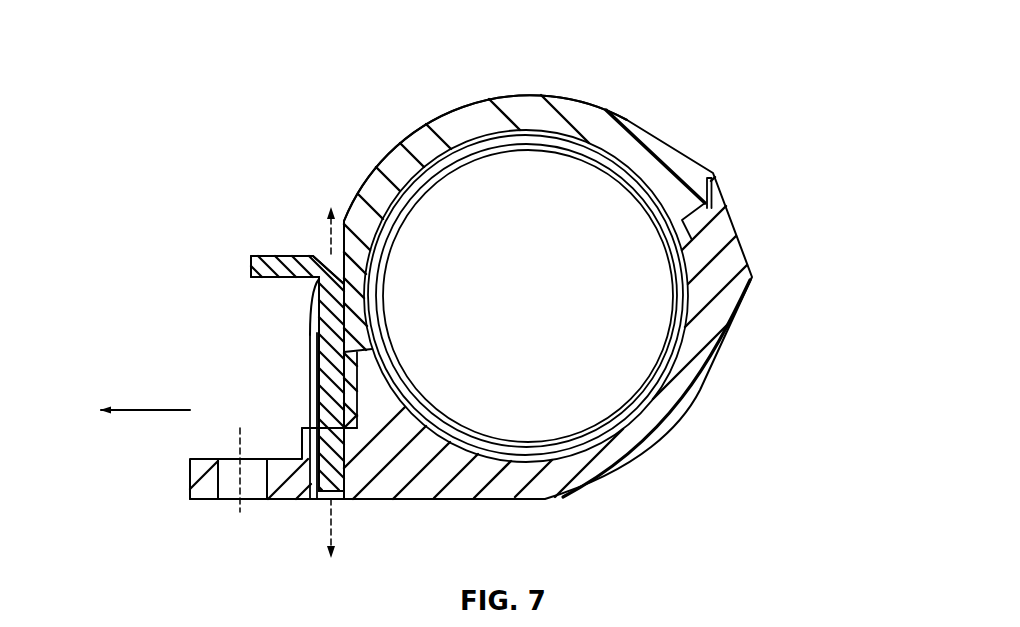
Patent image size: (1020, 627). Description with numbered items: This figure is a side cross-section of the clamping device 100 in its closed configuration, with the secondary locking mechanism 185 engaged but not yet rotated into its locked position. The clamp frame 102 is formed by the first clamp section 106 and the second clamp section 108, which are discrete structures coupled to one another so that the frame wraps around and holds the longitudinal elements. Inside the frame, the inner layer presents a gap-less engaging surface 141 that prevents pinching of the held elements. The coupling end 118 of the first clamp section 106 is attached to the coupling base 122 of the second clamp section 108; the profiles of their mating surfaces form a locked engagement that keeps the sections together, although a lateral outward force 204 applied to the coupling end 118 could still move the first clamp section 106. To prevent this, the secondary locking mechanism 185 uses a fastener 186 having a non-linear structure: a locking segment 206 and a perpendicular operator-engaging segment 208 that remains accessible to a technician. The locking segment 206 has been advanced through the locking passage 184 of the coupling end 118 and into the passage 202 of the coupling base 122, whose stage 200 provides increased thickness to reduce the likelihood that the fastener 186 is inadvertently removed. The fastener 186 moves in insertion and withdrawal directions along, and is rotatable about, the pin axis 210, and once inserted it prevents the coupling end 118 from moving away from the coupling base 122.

The clamping device 100 is at (752, 42).
The clamp frame 102 is at (625, 103).
The first clamp section 106 is at (487, 93).
The second clamp section 108 is at (658, 448).
The coupling end 118 is at (312, 417).
The coupling base 122 is at (367, 408).
The gap-less engaging surface 141 is at (438, 190).
The locking passage 184 is at (309, 380).
The secondary locking mechanism 185 is at (198, 272).
The fastener 186 is at (282, 246).
The stage 200 is at (302, 445).
The passage 202 is at (323, 504).
The lateral outward force 204 is at (145, 375).
The locking segment 206 is at (326, 318).
The operator-engaging segment 208 is at (298, 256).
The pin axis 210 is at (328, 537).